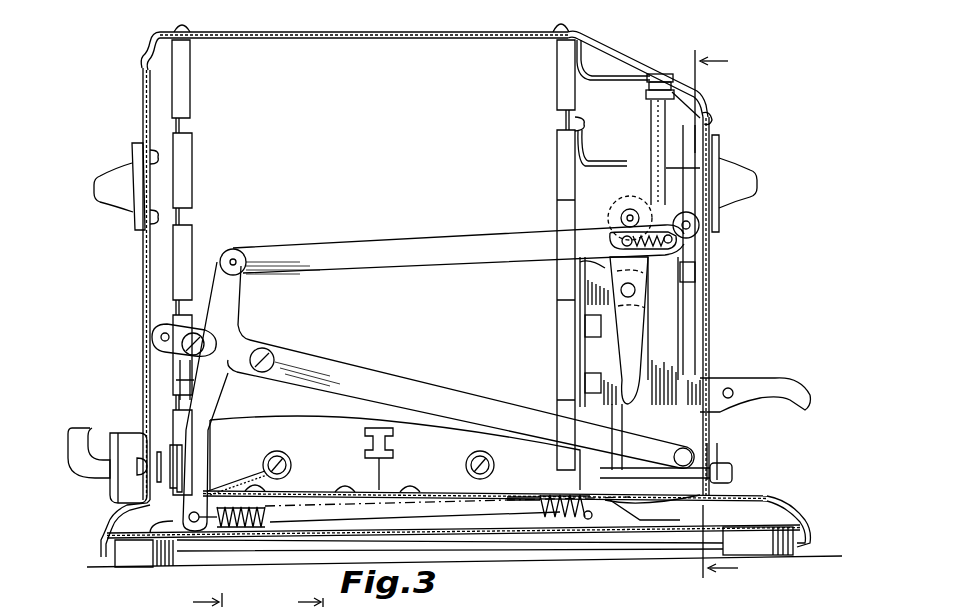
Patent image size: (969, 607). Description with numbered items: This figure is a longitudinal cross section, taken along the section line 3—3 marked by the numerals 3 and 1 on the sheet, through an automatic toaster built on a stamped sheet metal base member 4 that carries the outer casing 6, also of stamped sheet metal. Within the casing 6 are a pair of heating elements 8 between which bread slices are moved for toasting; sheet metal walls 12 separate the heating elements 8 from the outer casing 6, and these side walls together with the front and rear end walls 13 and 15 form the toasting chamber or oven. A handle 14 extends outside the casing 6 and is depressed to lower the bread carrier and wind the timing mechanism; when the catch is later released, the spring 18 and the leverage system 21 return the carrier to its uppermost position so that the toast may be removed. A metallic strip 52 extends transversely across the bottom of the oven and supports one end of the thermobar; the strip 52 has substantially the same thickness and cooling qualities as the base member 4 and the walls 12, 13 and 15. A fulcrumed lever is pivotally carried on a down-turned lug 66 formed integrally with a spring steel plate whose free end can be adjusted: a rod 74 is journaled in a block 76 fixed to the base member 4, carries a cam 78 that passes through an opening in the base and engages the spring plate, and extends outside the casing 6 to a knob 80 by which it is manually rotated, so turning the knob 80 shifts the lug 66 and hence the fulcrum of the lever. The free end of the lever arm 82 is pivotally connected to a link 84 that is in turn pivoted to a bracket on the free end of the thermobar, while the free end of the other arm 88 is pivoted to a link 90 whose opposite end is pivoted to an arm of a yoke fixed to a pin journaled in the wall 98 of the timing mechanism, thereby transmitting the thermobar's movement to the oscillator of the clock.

The section line 1 is at (312, 593).
The section line 3 is at (207, 591).
The base member 4 is at (765, 495).
The outer casing 6 is at (716, 114).
The heating elements 8 is at (303, 432).
The sheet metal walls 12 is at (262, 47).
The front end wall 13 is at (577, 60).
The handle 14 is at (770, 378).
The rear end wall 15 is at (170, 272).
The spring 18 is at (240, 532).
The leverage system 21 is at (361, 239).
The metallic strip 52 is at (270, 503).
The down-turned lug 66 is at (580, 515).
The rod 74 is at (713, 457).
The block 76 is at (603, 450).
The cam 78 is at (617, 467).
The knob 80 is at (733, 473).
The arm 82 is at (543, 517).
The link 84 is at (495, 507).
The arm 88 is at (630, 503).
The link 90 is at (641, 467).
The wall 98 is at (708, 322).